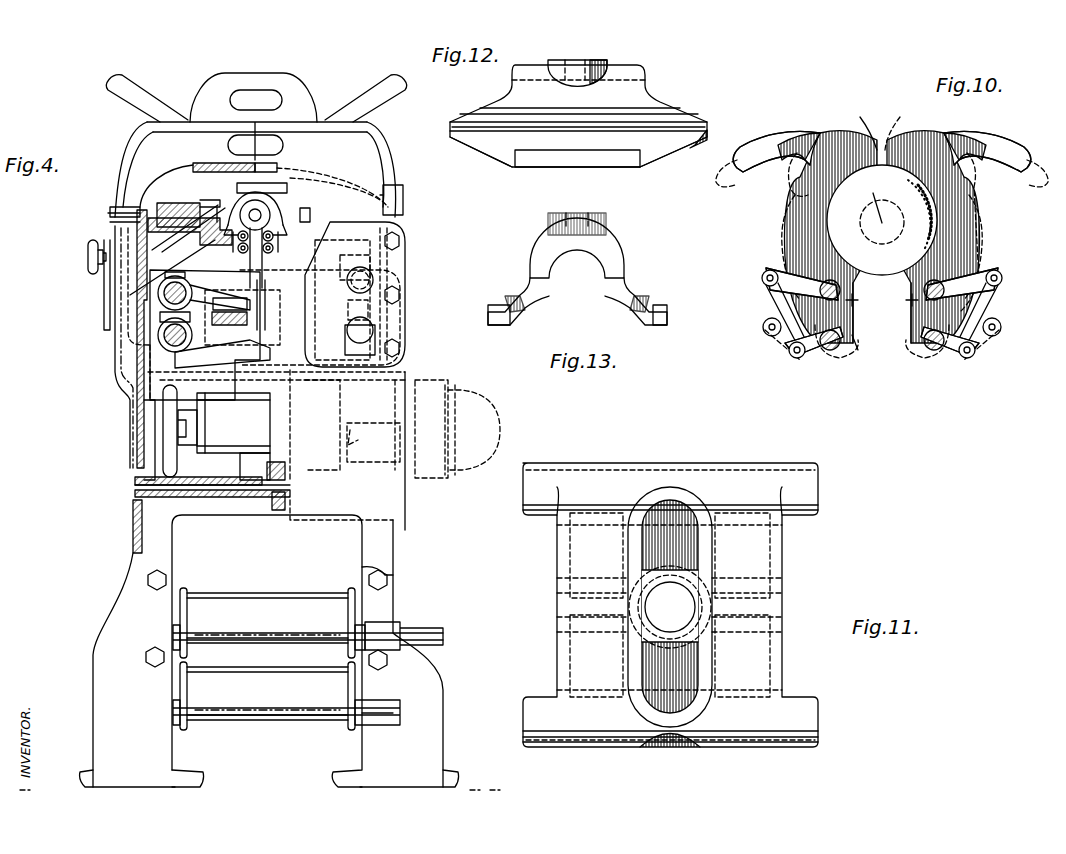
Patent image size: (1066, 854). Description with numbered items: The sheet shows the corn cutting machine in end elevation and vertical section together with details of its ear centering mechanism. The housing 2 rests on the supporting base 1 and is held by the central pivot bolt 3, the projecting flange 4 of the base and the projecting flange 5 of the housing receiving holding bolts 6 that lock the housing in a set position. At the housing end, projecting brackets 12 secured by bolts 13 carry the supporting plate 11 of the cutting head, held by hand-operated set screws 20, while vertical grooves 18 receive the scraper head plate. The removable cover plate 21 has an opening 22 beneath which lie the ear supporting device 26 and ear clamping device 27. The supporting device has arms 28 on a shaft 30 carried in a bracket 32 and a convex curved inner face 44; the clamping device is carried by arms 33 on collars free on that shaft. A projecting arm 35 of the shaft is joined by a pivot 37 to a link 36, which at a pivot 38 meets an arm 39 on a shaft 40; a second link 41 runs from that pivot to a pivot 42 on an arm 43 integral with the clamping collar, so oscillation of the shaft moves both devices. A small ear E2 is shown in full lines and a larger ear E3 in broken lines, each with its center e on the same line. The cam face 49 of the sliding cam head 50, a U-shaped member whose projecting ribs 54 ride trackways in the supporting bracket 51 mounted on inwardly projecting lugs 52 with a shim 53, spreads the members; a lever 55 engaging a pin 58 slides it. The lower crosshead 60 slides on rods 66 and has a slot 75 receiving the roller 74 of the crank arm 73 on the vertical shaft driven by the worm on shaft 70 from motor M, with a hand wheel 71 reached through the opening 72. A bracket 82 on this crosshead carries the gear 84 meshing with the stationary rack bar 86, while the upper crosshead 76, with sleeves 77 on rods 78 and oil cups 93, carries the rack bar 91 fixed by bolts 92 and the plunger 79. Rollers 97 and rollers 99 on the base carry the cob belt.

In FIG. 4, the supporting base 1 is at (115, 608).
In FIG. 4, the housing 2 is at (104, 318).
In FIG. 4, the central pivot bolt 3 is at (272, 500).
In FIG. 4, the projecting flange 4 is at (205, 490).
In FIG. 4, the projecting flange 5 is at (228, 462).
In FIG. 4, the holding bolts 6 is at (280, 462).
In FIG. 4, the supporting plate 11 is at (298, 113).
In FIG. 4, the projecting brackets 12 is at (395, 270).
In FIG. 4, the bolts 13 is at (418, 335).
In FIG. 4, the vertical grooves 18 is at (390, 262).
In FIG. 4, the hand-operated set screws 20 is at (88, 258).
In FIG. 4, the removable cover plate 21 is at (195, 163).
In FIG. 4, the opening 22 is at (240, 175).
In FIG. 10, the ear supporting device 26 is at (859, 328).
In FIG. 10, the ear clamping device 27 is at (752, 156).
In FIG. 10, the arms 28 is at (864, 343).
In FIG. 10, the shaft 30 is at (833, 352).
In FIG. 4, the bracket 32 is at (236, 245).
In FIG. 10, the arms 33 is at (800, 216).
In FIG. 10, the projecting arm 35 is at (826, 350).
In FIG. 10, the link 36 is at (760, 340).
In FIG. 10, the pivot 37 is at (795, 358).
In FIG. 10, the pivot 38 is at (760, 278).
In FIG. 10, the arm 39 is at (768, 262).
In FIG. 10, the shaft 40 is at (873, 314).
In FIG. 10, the second link 41 is at (765, 300).
In FIG. 10, the pivot 42 is at (763, 324).
In FIG. 10, the arm 43 is at (785, 345).
In FIG. 10, the curved inner face 44 is at (862, 297).
In FIG. 12, the cam face 49 is at (465, 148).
In FIG. 13, the cam face 49 is at (630, 300).
In FIG. 12, the sliding cam head 50 is at (643, 92).
In FIG. 13, the sliding cam head 50 is at (608, 238).
In FIG. 4, the supporting bracket 51 is at (208, 212).
In FIG. 4, the inwardly projecting lugs 52 is at (113, 226).
In FIG. 4, the shim 53 is at (108, 213).
In FIG. 4, the projecting ribs 54 is at (277, 227).
In FIG. 12, the projecting ribs 54 is at (620, 158).
In FIG. 13, the projecting ribs 54 is at (495, 302).
In FIG. 4, the lever 55 is at (280, 177).
In FIG. 4, the pin 58 is at (257, 170).
In FIG. 4, the crosshead 60 is at (270, 338).
In FIG. 11, the crosshead 60 is at (760, 552).
In FIG. 4, the rods 66 is at (175, 342).
In FIG. 4, the shaft 70 is at (355, 450).
In FIG. 4, the hand wheel 71 is at (165, 445).
In FIG. 4, the opening 72 is at (145, 410).
In FIG. 4, the crank arm 73 is at (225, 380).
In FIG. 4, the roller 74 is at (140, 375).
In FIG. 11, the slot 75 is at (674, 500).
In FIG. 4, the upper crosshead 76 is at (158, 335).
In FIG. 4, the sleeves 77 is at (152, 295).
In FIG. 4, the rods 78 is at (160, 290).
In FIG. 10, the plunger 79 is at (898, 202).
In FIG. 11, the bracket 82 is at (610, 625).
In FIG. 4, the gear 84 is at (300, 310).
In FIG. 4, the rack bar 86 is at (242, 316).
In FIG. 4, the rack bar 91 is at (345, 293).
In FIG. 4, the bolts 92 is at (403, 200).
In FIG. 4, the oil cups 93 is at (132, 270).
In FIG. 4, the rollers 97 is at (246, 600).
In FIG. 4, the rollers 99 is at (252, 698).
In FIG. 4, the operating motor M is at (458, 380).
In FIG. 10, the center of the ear e is at (874, 199).
In FIG. 10, the ear E2 is at (856, 122).
In FIG. 10, the ear E3 is at (900, 122).